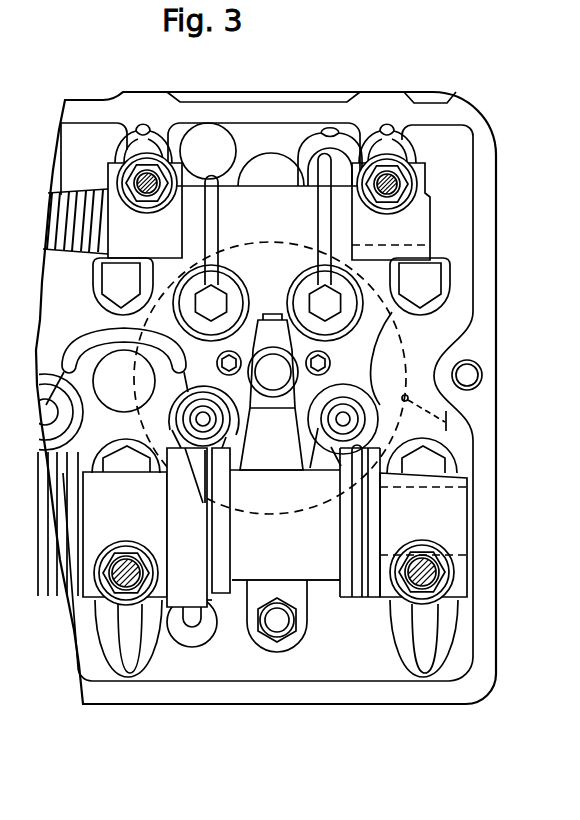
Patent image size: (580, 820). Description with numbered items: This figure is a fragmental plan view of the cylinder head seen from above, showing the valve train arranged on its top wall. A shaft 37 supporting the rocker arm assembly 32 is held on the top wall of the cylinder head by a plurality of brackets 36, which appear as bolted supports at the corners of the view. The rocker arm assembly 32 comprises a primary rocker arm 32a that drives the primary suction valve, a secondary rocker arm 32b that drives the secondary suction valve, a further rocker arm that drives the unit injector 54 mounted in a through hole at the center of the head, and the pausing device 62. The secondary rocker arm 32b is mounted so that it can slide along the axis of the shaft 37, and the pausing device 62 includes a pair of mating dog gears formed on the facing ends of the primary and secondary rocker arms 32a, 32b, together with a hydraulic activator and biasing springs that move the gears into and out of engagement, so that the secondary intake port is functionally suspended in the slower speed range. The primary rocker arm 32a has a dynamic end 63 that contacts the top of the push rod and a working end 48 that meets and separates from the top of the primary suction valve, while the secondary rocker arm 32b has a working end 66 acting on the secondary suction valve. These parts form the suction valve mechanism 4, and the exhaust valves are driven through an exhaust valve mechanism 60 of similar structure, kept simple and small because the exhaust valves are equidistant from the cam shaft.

The exhaust valve mechanism 60 is at (223, 168).
The bracket 36 is at (130, 146).
The unit injector 54 is at (277, 370).
The working end 66 is at (342, 405).
The dynamic end 63 is at (203, 420).
The pausing device 62 is at (226, 536).
The shaft 37 is at (458, 552).
The working end 48 is at (192, 630).
The valve mechanism 4 is at (229, 608).
The primary rocker arm 32a is at (222, 605).
The secondary rocker arm 32b is at (320, 570).
The rocker arm assembly 32 is at (338, 768).